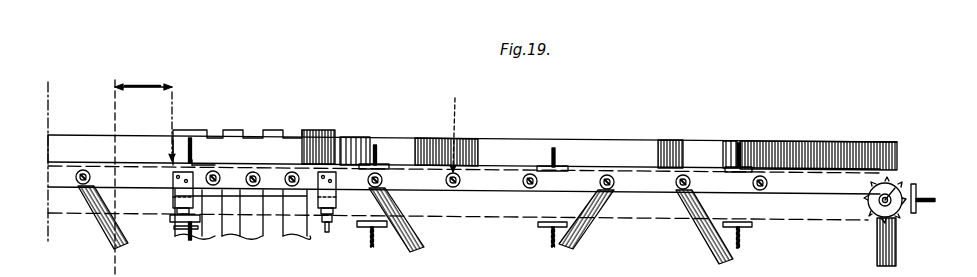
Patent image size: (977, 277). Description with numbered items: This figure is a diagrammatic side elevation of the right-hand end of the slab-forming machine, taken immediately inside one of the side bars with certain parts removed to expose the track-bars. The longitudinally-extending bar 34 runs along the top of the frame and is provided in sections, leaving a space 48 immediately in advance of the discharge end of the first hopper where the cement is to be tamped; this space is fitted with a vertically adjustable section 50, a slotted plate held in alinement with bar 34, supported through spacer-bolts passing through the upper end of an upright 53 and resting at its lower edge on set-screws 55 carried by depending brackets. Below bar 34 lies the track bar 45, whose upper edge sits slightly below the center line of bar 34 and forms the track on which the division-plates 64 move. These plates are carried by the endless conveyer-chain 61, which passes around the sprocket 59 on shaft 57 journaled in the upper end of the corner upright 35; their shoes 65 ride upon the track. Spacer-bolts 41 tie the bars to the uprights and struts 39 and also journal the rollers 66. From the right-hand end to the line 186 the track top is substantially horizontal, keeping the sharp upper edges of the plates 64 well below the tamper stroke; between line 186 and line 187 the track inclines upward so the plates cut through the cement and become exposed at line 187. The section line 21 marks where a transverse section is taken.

The section line 21 is at (142, 76).
The longitudinally-extending bar 34 is at (70, 140).
The upright bar 35 is at (897, 242).
The strut 39 is at (110, 238).
The spacer-bolt 41 is at (525, 188).
The track bar 45 is at (632, 183).
The space 48 is at (172, 147).
The vertically adjustable section 50 is at (235, 130).
The upright 53 is at (292, 234).
The set-screw 55 is at (176, 220).
The shaft 57 is at (894, 184).
The sprocket 59 is at (917, 190).
The conveyer-chain 61 is at (62, 214).
The division-plate 64 is at (191, 140).
The shoe 65 is at (385, 165).
The roller 66 is at (84, 171).
The line 186 is at (462, 92).
The line 187 is at (173, 100).